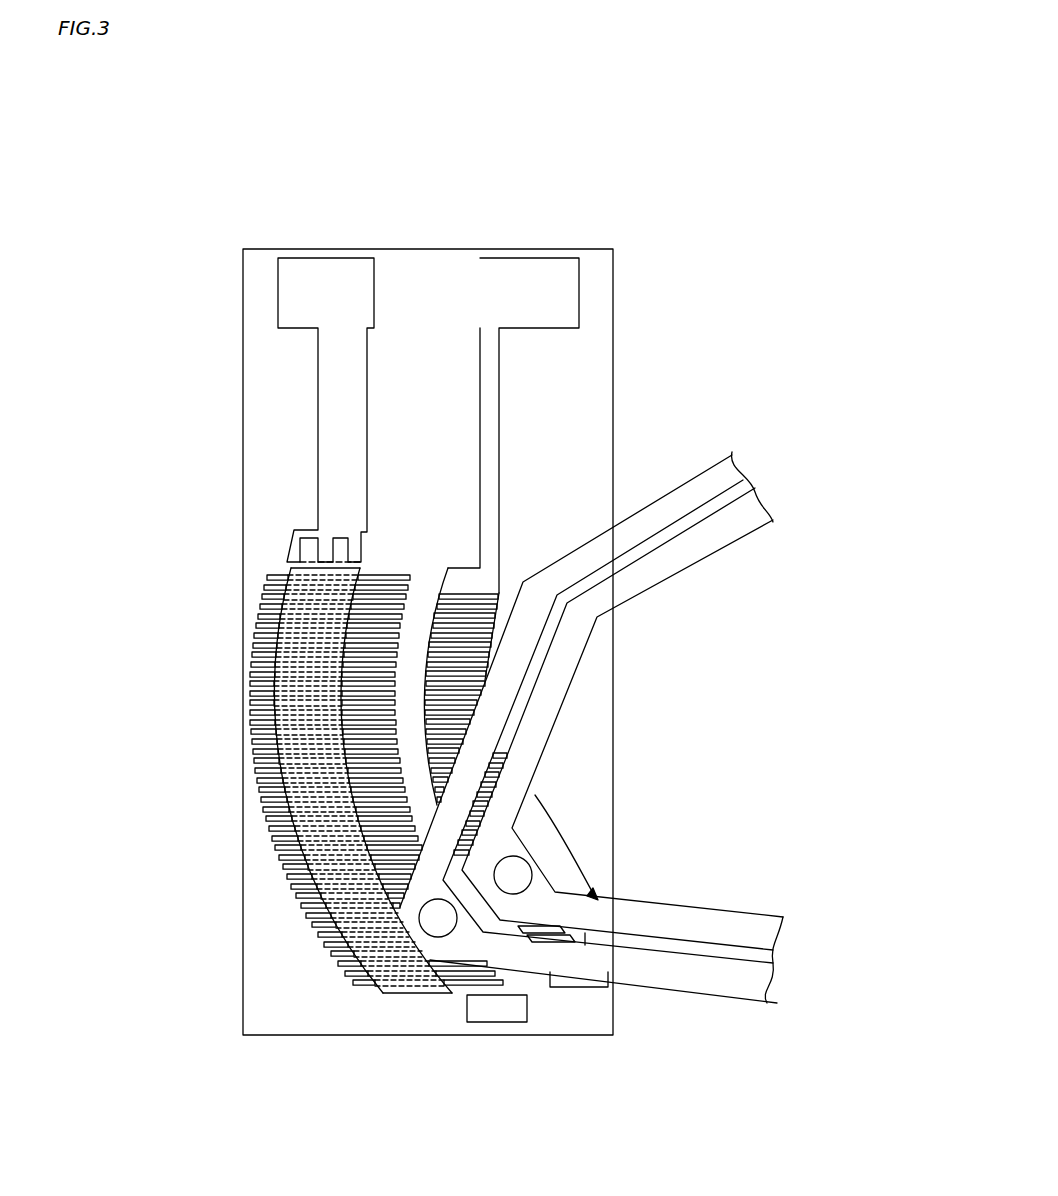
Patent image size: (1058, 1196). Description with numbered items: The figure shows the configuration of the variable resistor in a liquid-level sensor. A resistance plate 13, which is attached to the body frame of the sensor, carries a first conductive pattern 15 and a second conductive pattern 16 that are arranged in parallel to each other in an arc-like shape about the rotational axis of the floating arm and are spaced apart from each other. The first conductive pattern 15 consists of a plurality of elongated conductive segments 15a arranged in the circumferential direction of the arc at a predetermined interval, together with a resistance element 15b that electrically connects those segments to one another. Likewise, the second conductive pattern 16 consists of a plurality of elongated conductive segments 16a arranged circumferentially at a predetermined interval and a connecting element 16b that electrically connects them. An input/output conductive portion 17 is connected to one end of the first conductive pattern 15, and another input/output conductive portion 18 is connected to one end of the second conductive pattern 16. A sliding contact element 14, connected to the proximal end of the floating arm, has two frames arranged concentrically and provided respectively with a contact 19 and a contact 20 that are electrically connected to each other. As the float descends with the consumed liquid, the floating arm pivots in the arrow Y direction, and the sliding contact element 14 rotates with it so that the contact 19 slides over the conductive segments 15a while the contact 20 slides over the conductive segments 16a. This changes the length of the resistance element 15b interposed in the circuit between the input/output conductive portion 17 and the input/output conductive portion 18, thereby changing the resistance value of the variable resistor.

The resistance plate 13 is at (241, 1029).
The sliding contact element 14 is at (527, 772).
The first conductive pattern 15 is at (325, 843).
The conductive segments 15a is at (283, 863).
The resistance element 15b is at (419, 995).
The second conductive pattern 16 is at (558, 645).
The conductive segments 16a is at (455, 663).
The connecting element 16b is at (425, 745).
The input/output conductive portion 17 is at (352, 268).
The input/output conductive portion 18 is at (556, 268).
The contact 19 is at (445, 918).
The contact 20 is at (520, 870).